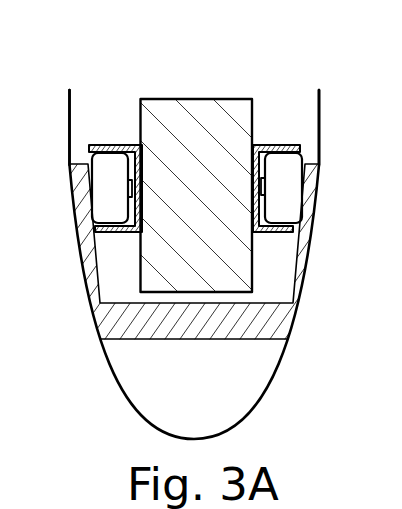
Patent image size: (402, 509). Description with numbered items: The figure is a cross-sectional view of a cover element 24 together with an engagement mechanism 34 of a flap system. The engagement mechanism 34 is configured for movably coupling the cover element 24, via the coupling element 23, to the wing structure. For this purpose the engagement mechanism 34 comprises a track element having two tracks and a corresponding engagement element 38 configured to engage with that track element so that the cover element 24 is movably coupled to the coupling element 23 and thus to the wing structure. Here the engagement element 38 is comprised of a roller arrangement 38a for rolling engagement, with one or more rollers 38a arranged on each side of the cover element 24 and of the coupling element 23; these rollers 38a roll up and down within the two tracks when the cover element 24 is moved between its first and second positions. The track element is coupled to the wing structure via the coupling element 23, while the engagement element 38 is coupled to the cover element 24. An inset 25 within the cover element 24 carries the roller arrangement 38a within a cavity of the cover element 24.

The coupling element 23 is at (233, 280).
The cover element 24 is at (120, 385).
The inset 25 is at (113, 318).
The engagement mechanism 34 is at (92, 92).
The engagement element 38 is at (100, 207).
The roller arrangement 38a is at (268, 195).